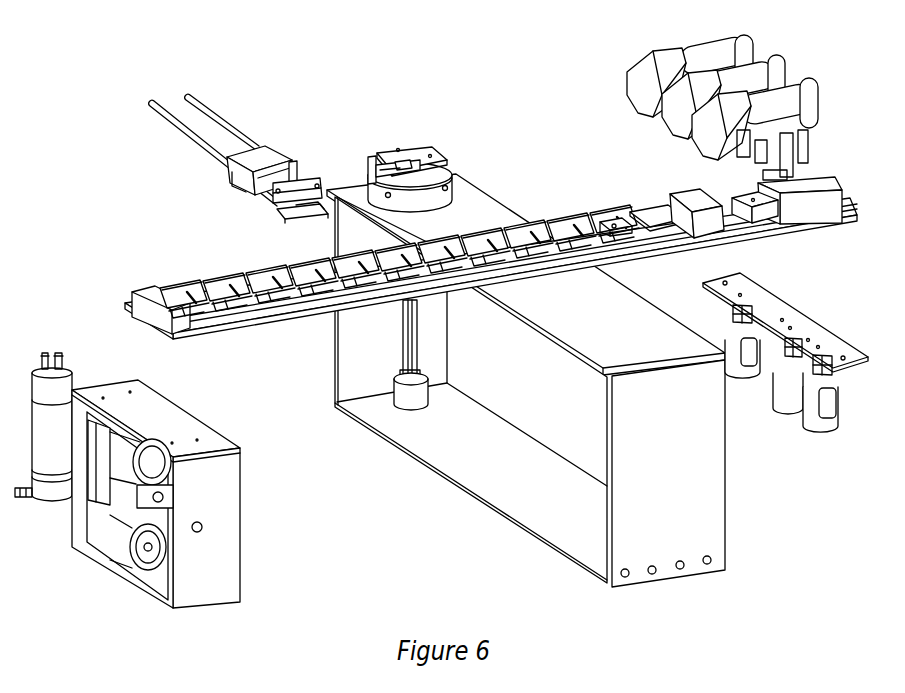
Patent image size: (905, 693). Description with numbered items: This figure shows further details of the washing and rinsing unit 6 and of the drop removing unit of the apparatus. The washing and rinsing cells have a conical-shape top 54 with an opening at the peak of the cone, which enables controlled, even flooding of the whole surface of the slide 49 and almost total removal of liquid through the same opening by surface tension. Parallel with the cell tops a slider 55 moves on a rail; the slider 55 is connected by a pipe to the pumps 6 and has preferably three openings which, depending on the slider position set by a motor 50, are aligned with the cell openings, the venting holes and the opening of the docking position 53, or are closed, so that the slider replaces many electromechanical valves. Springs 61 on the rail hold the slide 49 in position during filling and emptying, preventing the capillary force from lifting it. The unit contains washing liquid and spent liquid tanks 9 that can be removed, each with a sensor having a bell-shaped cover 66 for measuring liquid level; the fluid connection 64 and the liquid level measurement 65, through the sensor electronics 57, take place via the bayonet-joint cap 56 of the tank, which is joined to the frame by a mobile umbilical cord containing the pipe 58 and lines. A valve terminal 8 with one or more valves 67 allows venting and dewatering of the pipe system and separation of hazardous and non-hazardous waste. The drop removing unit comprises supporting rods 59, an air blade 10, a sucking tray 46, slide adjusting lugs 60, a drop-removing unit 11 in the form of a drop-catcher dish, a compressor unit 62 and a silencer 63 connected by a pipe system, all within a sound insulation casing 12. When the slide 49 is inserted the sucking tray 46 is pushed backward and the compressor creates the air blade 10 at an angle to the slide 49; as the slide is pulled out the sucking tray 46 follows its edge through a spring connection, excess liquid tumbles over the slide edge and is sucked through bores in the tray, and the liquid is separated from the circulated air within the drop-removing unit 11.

The pumps 6 is at (655, 65).
The valve terminal 8 is at (790, 317).
The tanks 9 is at (632, 552).
The air blade 10 is at (298, 163).
The drop-removing unit 11 is at (52, 347).
The sound insulation casing 12 is at (167, 422).
The sucking tray 46 is at (247, 158).
The slide 49 is at (307, 207).
The motor 50 is at (817, 192).
The docking position 53 is at (713, 207).
The conical-shape top 54 is at (663, 208).
The slider 55 is at (617, 215).
The cap 56 is at (452, 162).
The sensor electronics 57 is at (418, 150).
The pipe 58 is at (368, 183).
The supporting rods 59 is at (205, 108).
The slide adjusting lugs 60 is at (275, 213).
The springs 61 is at (205, 297).
The compressor unit 62 is at (107, 480).
The silencer 63 is at (145, 535).
The fluid connection 64 is at (404, 308).
The liquid level measurement 65 is at (410, 350).
The bell-shaped cover 66 is at (418, 387).
The valve 67 is at (812, 410).